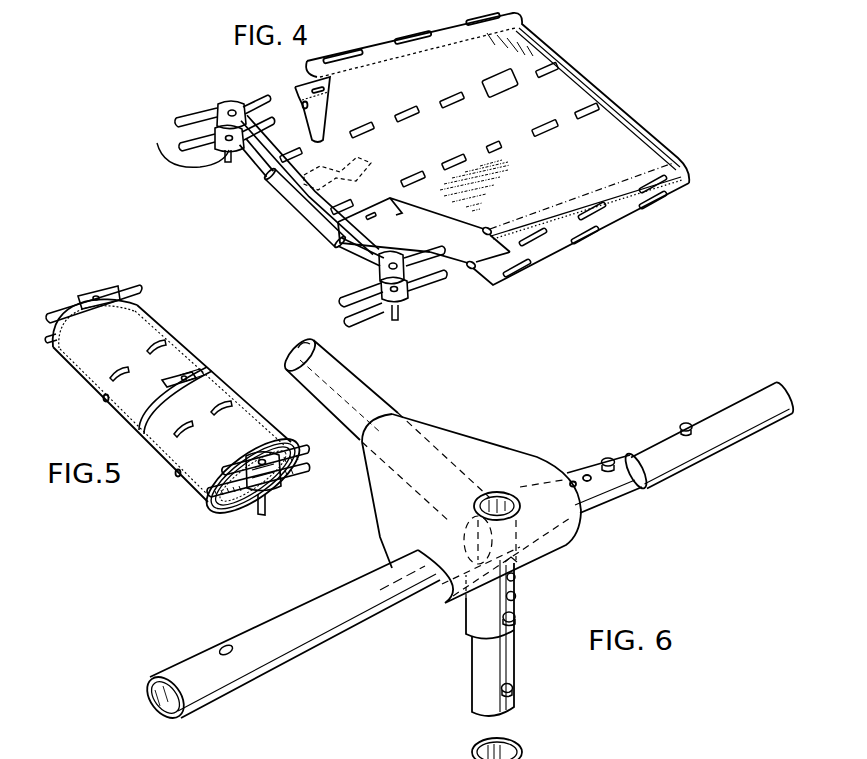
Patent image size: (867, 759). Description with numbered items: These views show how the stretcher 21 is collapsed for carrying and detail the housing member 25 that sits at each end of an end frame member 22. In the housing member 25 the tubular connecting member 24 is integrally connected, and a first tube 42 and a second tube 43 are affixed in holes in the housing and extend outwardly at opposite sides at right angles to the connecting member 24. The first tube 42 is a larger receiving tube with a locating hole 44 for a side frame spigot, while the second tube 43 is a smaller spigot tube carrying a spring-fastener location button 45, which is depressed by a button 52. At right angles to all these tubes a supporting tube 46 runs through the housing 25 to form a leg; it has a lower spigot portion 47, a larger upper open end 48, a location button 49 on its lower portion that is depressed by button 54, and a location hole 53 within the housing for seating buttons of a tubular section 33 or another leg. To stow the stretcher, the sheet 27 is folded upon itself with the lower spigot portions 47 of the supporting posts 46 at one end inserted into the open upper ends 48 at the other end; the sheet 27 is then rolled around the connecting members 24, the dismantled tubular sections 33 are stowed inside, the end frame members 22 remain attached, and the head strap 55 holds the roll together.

In FIG. 4, the stretcher 21 is at (485, 149).
In FIG. 5, the stretcher 21 is at (182, 405).
In FIG. 4, the end frame member 22 is at (404, 294).
In FIG. 5, the end frame member 22 is at (273, 476).
In FIG. 4, the tubular connecting member 24 is at (270, 165).
In FIG. 6, the tubular connecting member 24 is at (372, 412).
In FIG. 6, the housing member 25 is at (478, 445).
In FIG. 4, the sheet 27 is at (608, 136).
In FIG. 5, the sheet 27 is at (217, 395).
In FIG. 5, the tubular sections 33 is at (300, 452).
In FIG. 6, the first tube 42 is at (270, 624).
In FIG. 6, the second tube 43 is at (746, 396).
In FIG. 6, the locating hole 44 is at (224, 645).
In FIG. 6, the location button 45 is at (684, 422).
In FIG. 4, the supporting tube 46 is at (216, 130).
In FIG. 6, the supporting tube 46 is at (516, 590).
In FIG. 4, the lower spigot portion 47 is at (226, 158).
In FIG. 6, the lower spigot portion 47 is at (482, 665).
In FIG. 4, the upper open end 48 is at (229, 107).
In FIG. 6, the upper open end 48 is at (497, 503).
In FIG. 6, the location button 49 is at (513, 688).
In FIG. 6, the button 52 is at (607, 457).
In FIG. 6, the location hole 53 is at (473, 607).
In FIG. 6, the button 54 is at (516, 620).
In FIG. 5, the head strap 55 is at (182, 378).